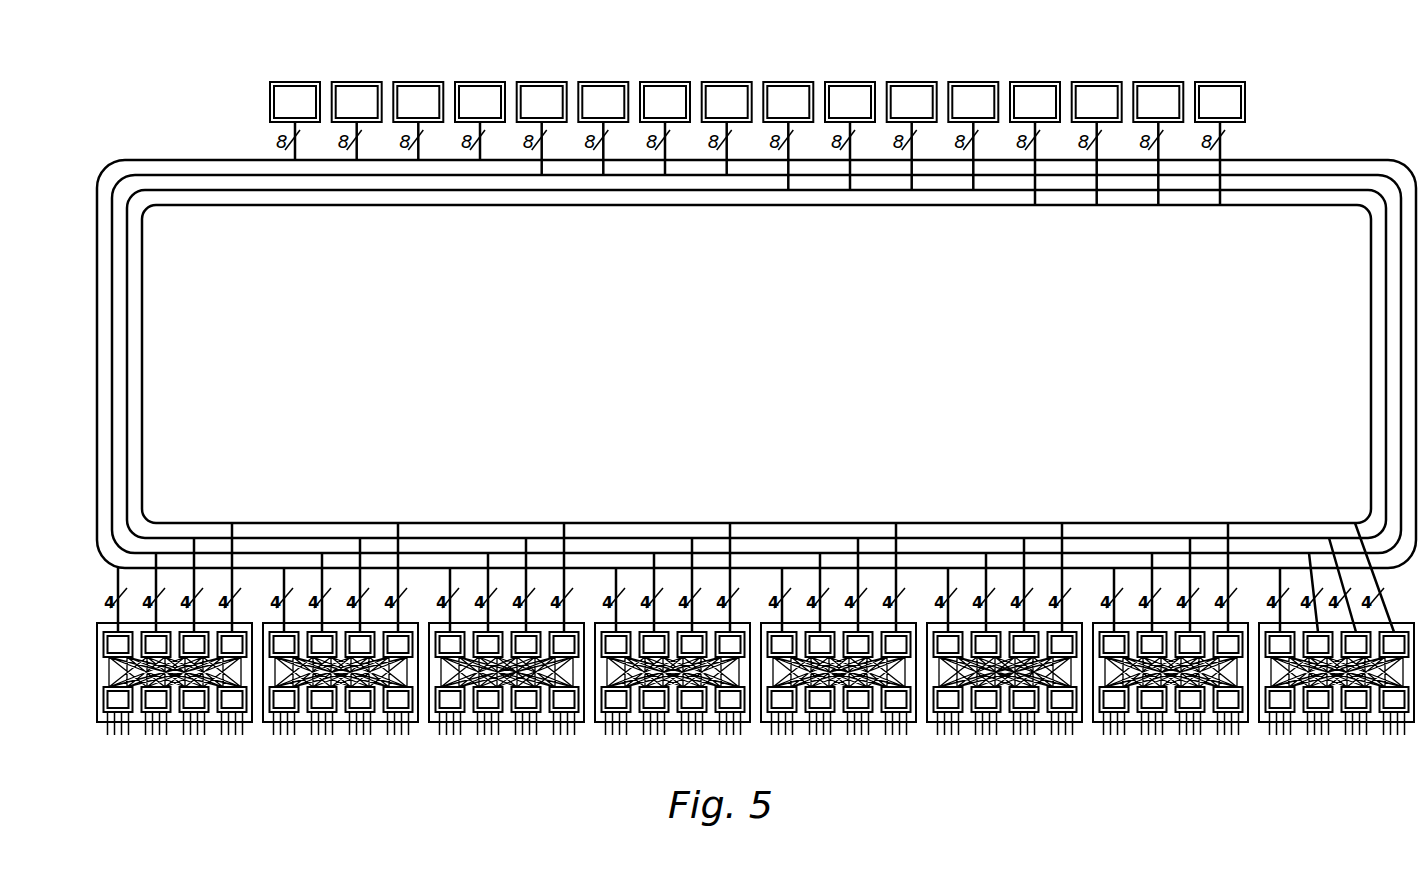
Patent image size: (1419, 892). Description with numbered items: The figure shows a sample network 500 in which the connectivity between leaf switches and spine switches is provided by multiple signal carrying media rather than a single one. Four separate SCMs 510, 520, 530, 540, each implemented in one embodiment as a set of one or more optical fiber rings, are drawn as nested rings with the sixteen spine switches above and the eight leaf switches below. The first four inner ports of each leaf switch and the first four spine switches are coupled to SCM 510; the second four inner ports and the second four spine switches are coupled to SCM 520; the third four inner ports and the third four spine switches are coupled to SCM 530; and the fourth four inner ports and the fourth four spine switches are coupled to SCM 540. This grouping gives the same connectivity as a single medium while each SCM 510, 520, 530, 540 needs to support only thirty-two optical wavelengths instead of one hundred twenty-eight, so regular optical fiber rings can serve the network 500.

The network 500 is at (1303, 64).
The SCM 510 is at (98, 452).
The SCM 520 is at (113, 395).
The SCM 530 is at (128, 335).
The SCM 540 is at (143, 276).